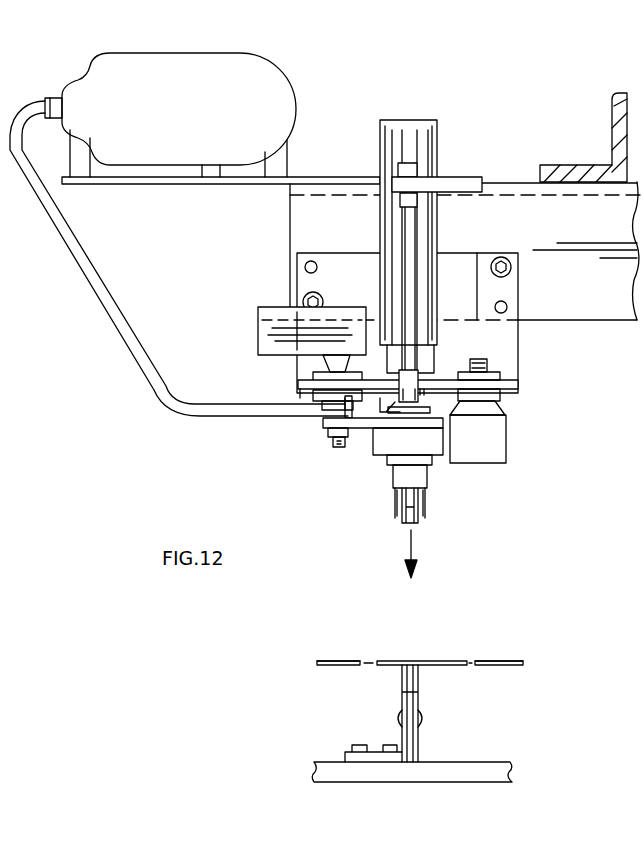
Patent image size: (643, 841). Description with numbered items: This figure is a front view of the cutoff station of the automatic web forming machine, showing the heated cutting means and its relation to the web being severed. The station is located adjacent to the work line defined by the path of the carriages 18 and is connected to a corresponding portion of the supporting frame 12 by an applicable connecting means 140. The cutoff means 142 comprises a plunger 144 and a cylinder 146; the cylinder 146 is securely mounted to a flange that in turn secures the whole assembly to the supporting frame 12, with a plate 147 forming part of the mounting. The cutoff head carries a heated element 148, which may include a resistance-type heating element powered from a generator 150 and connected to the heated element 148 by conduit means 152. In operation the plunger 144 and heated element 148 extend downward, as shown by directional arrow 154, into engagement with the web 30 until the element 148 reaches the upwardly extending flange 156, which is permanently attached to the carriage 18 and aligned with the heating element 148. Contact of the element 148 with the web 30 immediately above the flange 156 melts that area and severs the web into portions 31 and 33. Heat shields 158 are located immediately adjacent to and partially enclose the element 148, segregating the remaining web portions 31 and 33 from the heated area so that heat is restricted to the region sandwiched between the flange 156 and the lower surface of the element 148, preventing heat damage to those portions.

The supporting frame 12 is at (591, 312).
The carriage 18 is at (473, 763).
The web portion 30 is at (426, 650).
The web portion 31 is at (356, 667).
The web portion 33 is at (501, 667).
The connecting means 140 is at (312, 292).
The cutoff means 142 is at (476, 160).
The plunger 144 is at (436, 397).
The cylinder 146 is at (430, 230).
The mounting plate 147 is at (516, 385).
The heated element 148 is at (414, 521).
The generator 150 is at (165, 62).
The conduit means 152 is at (113, 313).
The directional arrow 154 is at (408, 549).
The upwardly extending flange 156 is at (420, 689).
The heat shields 158 is at (395, 497).